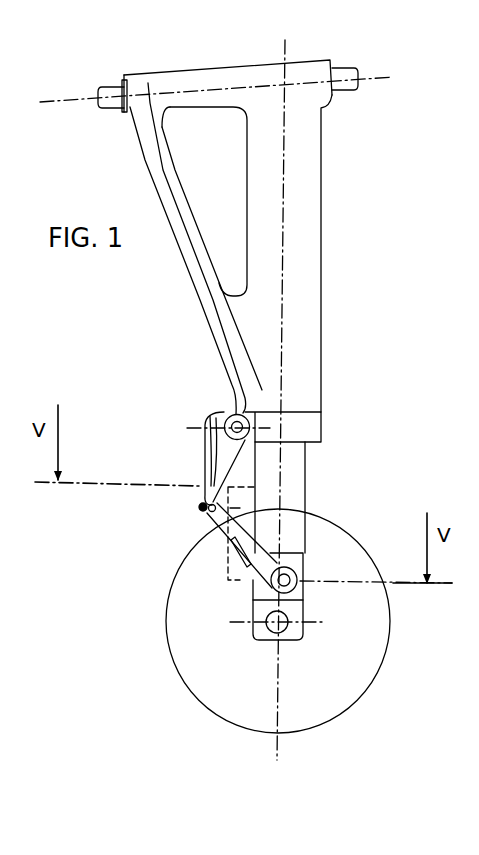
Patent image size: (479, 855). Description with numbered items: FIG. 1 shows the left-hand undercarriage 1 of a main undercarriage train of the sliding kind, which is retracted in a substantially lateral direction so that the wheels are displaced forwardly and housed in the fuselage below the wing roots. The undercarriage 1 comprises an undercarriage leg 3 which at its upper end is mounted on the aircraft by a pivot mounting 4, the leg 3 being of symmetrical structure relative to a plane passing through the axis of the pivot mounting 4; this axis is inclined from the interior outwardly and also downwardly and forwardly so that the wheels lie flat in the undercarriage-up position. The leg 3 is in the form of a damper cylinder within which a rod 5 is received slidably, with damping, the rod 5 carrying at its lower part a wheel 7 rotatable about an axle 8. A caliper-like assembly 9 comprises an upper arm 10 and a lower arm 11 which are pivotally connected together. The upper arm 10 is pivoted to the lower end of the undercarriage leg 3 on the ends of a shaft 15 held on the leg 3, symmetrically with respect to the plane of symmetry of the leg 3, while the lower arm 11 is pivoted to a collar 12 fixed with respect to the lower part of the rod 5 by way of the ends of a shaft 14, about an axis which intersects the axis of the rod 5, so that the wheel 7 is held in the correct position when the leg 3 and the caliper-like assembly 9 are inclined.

The left-hand undercarriage 1 is at (190, 296).
The undercarriage leg 3 is at (300, 246).
The pivot mounting 4 is at (113, 102).
The rod 5 is at (292, 472).
The wheel 7 is at (187, 607).
The axle 8 is at (273, 627).
The caliper-like assembly 9 is at (194, 515).
The upper arm 10 is at (210, 457).
The lower arm 11 is at (216, 533).
The collar 12 is at (293, 562).
The shaft 14 is at (290, 588).
The shaft 15 is at (222, 415).